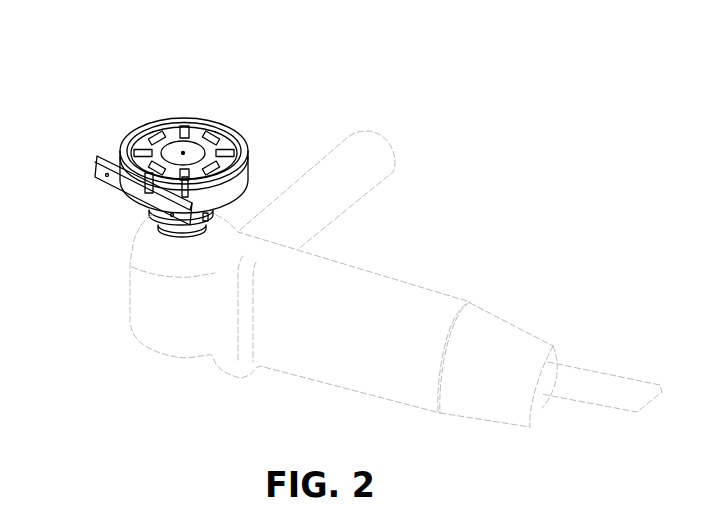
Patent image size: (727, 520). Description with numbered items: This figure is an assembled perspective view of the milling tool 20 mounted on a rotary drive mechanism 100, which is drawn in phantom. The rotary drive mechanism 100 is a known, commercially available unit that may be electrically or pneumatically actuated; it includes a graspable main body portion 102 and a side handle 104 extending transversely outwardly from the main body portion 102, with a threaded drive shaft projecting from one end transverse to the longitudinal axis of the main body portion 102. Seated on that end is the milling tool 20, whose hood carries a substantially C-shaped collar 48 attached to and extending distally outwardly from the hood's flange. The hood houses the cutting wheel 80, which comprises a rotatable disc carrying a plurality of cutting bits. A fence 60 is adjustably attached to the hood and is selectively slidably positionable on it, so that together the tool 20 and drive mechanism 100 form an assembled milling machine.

The milling tool 20 is at (247, 88).
The C-shaped collar 48 is at (248, 165).
The cutting wheel 80 is at (173, 137).
The fence 60 is at (117, 188).
The rotary drive mechanism 100 is at (461, 248).
The main body portion 102 is at (396, 321).
The side handle 104 is at (380, 147).